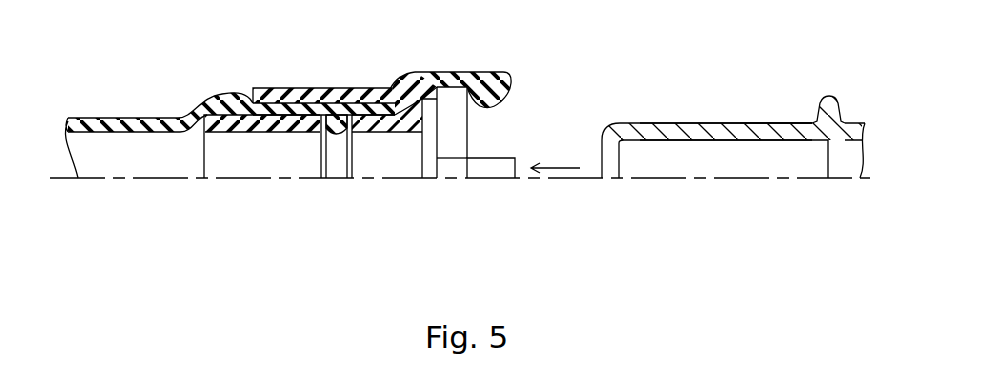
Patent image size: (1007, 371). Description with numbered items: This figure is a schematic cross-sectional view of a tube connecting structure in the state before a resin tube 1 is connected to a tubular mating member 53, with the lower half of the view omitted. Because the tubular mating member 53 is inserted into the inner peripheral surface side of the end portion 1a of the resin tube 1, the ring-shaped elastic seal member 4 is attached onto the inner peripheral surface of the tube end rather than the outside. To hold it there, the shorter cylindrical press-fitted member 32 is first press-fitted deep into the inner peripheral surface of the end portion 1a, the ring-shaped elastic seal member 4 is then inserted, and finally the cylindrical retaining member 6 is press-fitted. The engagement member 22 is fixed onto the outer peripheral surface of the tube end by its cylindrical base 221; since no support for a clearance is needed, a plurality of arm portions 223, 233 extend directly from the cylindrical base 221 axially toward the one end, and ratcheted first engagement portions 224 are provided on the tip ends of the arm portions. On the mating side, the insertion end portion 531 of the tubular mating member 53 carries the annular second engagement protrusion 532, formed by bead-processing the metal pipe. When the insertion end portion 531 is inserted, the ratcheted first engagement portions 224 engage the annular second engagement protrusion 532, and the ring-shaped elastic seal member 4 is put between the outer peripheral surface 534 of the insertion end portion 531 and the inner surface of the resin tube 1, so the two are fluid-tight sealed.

The resin tube 1 is at (139, 110).
The end portion of the resin tube 1a is at (406, 78).
The engagement member 22 is at (422, 124).
The cylindrical base 221 is at (290, 88).
The arm portions 223 is at (447, 75).
The ratcheted first engagement portions 224 is at (497, 72).
The arm portions 233 is at (450, 168).
The shorter cylindrical press-fitted member 32 is at (256, 142).
The ring-shaped elastic seal member 4 is at (345, 112).
The cylindrical retaining member 6 is at (385, 137).
The tubular mating member 53 is at (736, 112).
The insertion end portion 531 is at (716, 130).
The outer peripheral surface of the insertion end portion 534 is at (767, 122).
The annular second engagement protrusion 532 is at (827, 96).